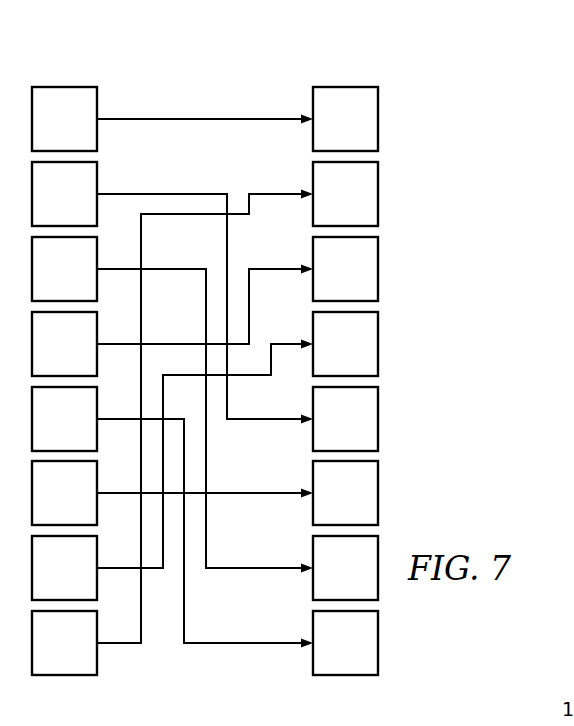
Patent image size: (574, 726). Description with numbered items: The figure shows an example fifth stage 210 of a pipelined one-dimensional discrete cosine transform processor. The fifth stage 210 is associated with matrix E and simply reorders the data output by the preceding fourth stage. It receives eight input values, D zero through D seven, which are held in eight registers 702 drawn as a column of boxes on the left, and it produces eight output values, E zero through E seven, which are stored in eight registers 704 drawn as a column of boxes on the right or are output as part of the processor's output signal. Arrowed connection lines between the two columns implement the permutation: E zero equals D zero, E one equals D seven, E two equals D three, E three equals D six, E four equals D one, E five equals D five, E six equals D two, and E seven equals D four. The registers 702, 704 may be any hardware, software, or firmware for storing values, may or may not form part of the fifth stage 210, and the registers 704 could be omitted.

The registers 702 is at (60, 73).
The registers 704 is at (348, 69).
The fifth stage 210 is at (258, 345).